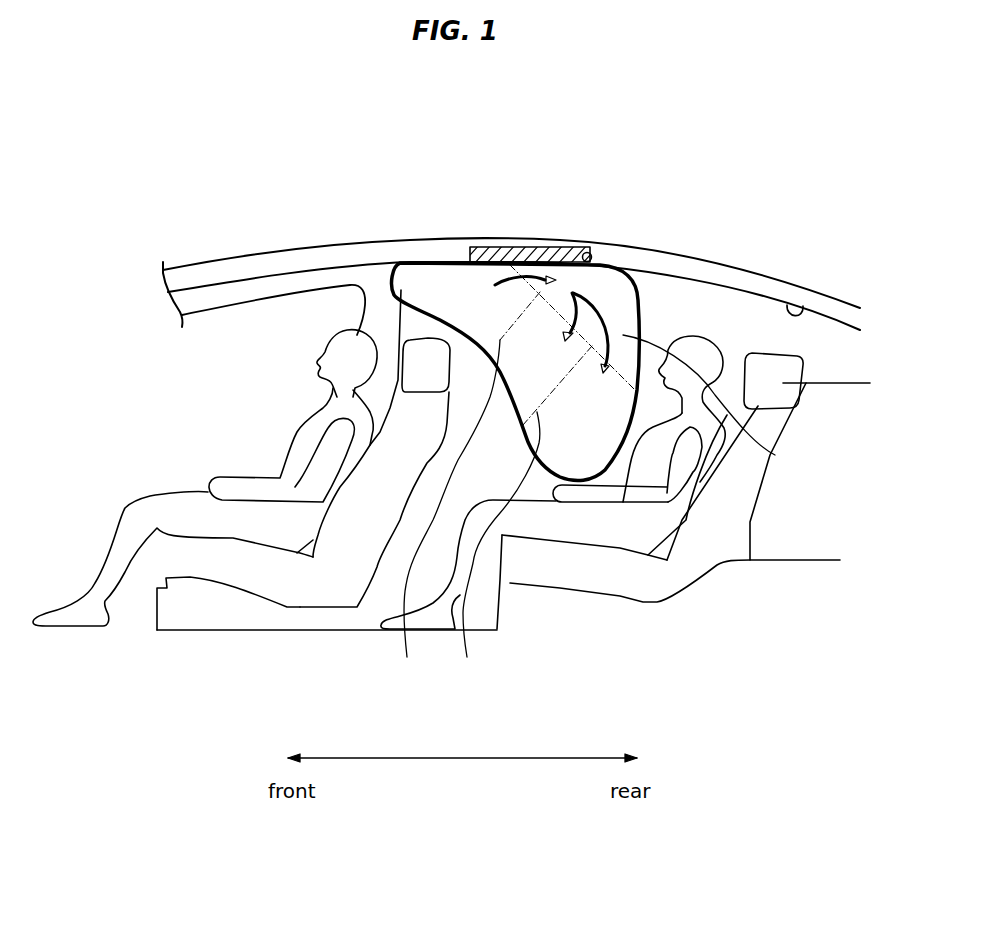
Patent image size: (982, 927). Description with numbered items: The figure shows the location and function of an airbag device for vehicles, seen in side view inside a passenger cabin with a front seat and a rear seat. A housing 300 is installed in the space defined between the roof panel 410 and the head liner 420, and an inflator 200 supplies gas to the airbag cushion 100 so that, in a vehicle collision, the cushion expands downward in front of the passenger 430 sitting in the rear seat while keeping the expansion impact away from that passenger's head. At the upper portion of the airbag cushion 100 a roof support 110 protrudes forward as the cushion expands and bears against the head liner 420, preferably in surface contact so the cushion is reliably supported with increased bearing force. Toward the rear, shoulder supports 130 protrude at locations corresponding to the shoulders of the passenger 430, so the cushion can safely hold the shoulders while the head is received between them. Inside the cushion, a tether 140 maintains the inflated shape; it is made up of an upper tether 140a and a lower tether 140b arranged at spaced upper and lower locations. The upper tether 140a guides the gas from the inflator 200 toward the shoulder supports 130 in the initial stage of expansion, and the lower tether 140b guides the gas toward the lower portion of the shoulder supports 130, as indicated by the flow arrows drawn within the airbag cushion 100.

The airbag cushion 100 is at (550, 328).
The roof support 110 is at (422, 283).
The shoulder supports 130 is at (775, 455).
The tether 140 is at (452, 536).
The upper tether 140a is at (432, 516).
The lower tether 140b is at (489, 552).
The inflator 200 is at (587, 253).
The housing 300 is at (510, 247).
The roof panel 410 is at (747, 270).
The head liner 420 is at (803, 306).
The passenger 430 is at (690, 480).